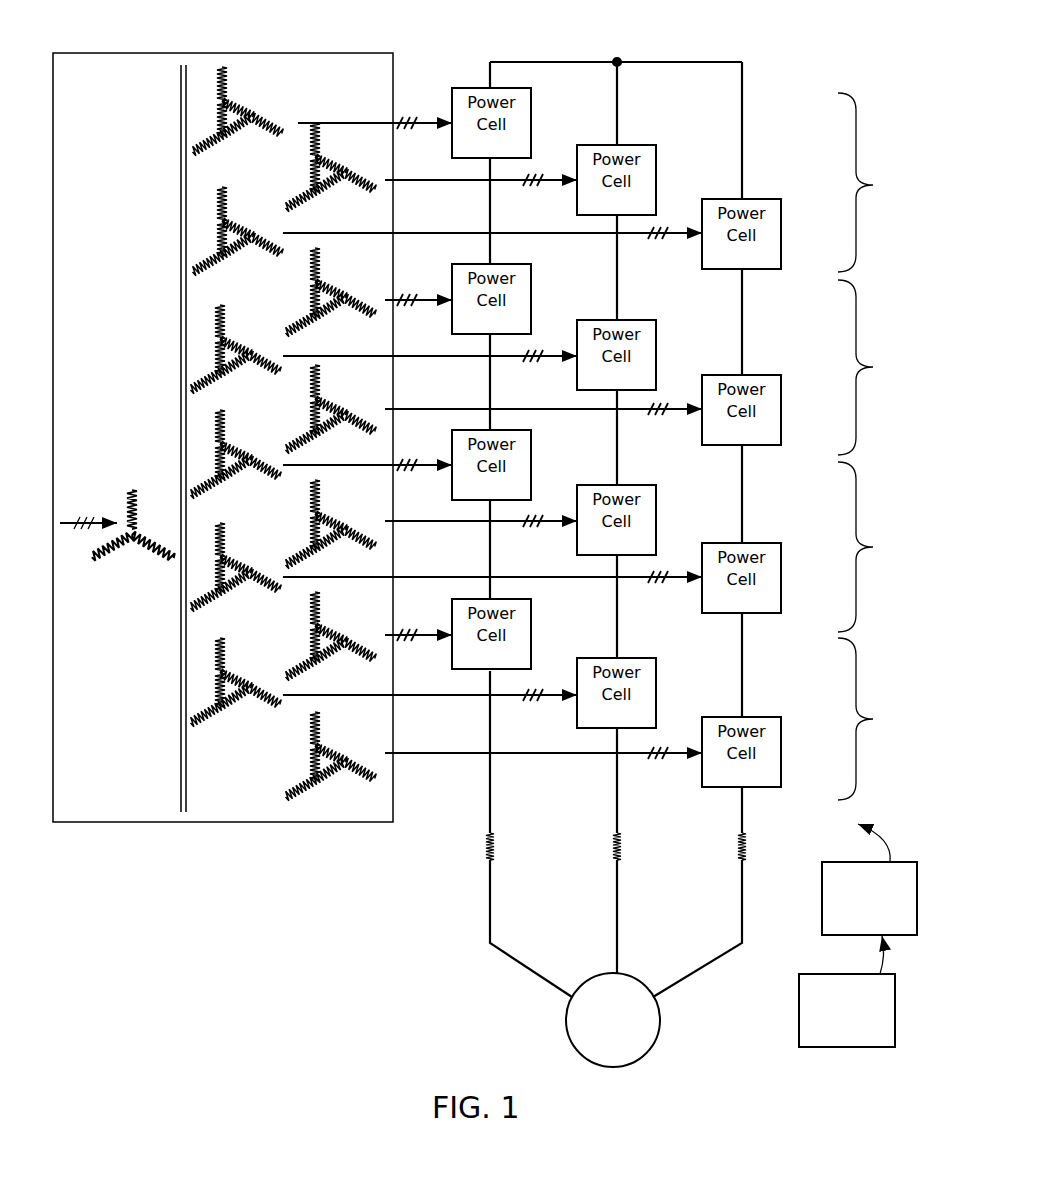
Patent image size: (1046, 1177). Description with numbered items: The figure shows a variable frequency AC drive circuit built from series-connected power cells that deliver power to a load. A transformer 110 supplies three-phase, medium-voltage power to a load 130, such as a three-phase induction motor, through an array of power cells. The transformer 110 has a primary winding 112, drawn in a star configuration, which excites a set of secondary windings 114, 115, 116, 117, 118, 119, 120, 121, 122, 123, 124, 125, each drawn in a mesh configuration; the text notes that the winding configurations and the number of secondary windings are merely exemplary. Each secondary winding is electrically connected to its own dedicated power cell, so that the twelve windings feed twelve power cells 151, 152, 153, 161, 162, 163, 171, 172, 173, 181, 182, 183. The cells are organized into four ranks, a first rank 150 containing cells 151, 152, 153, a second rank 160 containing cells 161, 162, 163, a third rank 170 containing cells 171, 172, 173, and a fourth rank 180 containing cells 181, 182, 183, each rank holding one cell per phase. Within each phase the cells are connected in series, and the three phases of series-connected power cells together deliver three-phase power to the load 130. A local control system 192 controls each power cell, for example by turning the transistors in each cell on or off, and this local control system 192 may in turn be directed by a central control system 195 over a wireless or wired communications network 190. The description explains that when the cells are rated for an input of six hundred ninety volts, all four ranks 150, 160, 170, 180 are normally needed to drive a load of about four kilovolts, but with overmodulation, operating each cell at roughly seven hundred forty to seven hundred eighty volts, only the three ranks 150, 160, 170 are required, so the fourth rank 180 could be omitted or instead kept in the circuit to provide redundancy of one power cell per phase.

The transformer 110 is at (122, 47).
The primary winding 112 is at (122, 482).
The secondary winding 114 is at (265, 92).
The secondary winding 115 is at (365, 162).
The secondary winding 116 is at (265, 210).
The secondary winding 117 is at (365, 273).
The secondary winding 118 is at (267, 328).
The secondary winding 119 is at (362, 384).
The secondary winding 120 is at (267, 435).
The secondary winding 121 is at (362, 498).
The secondary winding 122 is at (267, 553).
The secondary winding 123 is at (362, 610).
The secondary winding 124 is at (267, 663).
The secondary winding 125 is at (362, 732).
The load 130 is at (653, 1048).
The first rank of power cells 150 is at (884, 182).
The power cell 151 is at (533, 122).
The power cell 152 is at (660, 180).
The power cell 153 is at (784, 233).
The second rank of power cells 160 is at (884, 367).
The power cell 161 is at (533, 296).
The power cell 162 is at (660, 355).
The power cell 163 is at (784, 408).
The third rank of power cells 170 is at (884, 547).
The power cell 171 is at (533, 475).
The power cell 172 is at (660, 537).
The power cell 173 is at (784, 578).
The fourth rank of power cells 180 is at (884, 719).
The power cell 181 is at (533, 647).
The power cell 182 is at (662, 712).
The power cell 183 is at (782, 755).
The communications network 190 is at (868, 959).
The local control system 192 is at (818, 886).
The central control system 195 is at (815, 1052).